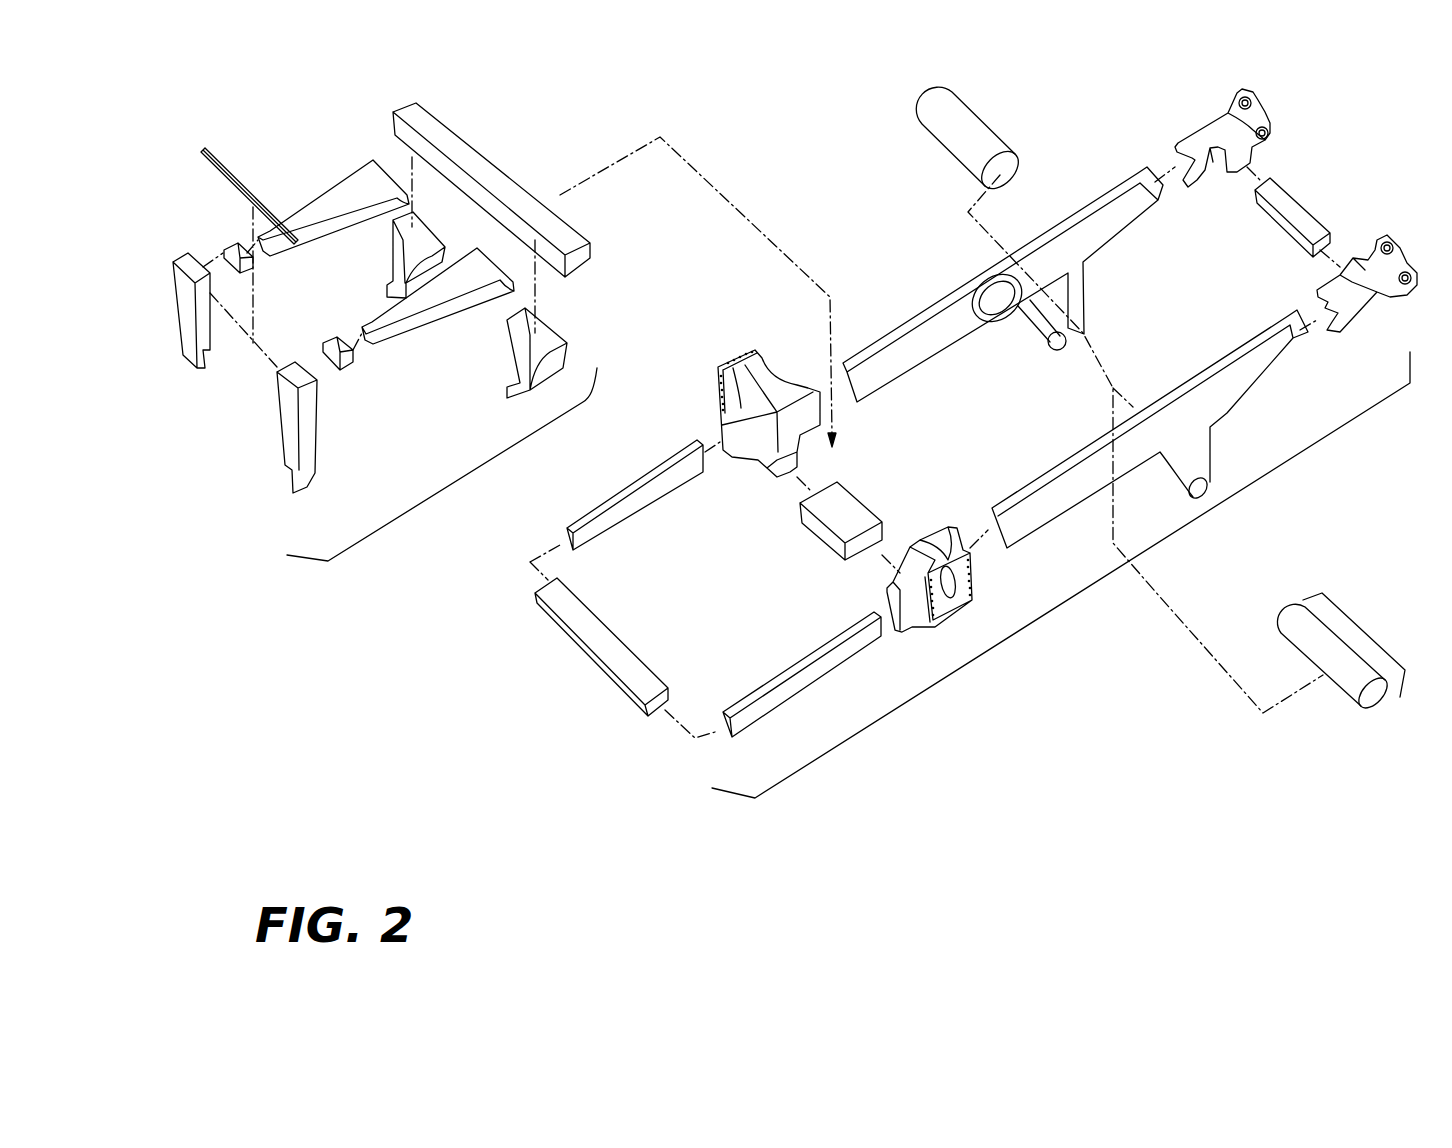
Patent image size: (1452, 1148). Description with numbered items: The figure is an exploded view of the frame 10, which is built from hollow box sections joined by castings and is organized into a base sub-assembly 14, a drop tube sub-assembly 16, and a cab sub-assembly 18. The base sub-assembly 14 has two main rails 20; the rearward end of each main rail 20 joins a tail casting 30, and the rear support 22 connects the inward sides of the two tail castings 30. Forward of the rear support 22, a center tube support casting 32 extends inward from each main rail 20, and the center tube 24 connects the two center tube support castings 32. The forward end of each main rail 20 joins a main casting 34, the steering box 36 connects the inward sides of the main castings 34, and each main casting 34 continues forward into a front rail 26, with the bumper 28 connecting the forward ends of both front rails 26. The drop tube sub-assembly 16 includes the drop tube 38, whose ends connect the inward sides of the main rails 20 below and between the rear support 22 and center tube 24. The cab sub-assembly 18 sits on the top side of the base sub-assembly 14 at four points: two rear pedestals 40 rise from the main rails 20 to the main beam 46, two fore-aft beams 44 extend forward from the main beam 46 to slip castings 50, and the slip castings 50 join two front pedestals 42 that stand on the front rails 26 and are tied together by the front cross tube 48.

The frame 10 is at (378, 667).
The base sub-assembly 14 is at (1045, 610).
The drop tube sub-assembly 16 is at (1365, 630).
The cab sub-assembly 18 is at (458, 484).
The main rails 20 is at (1227, 408).
The rear support 22 is at (1287, 180).
The center tube 24 is at (987, 137).
The front rails 26 is at (662, 495).
The bumper 28 is at (623, 653).
The tail casting 30 is at (1385, 232).
The center tube support casting 32 is at (1007, 327).
The main casting 34 is at (758, 377).
The steering box 36 is at (852, 508).
The drop tube 38 is at (1345, 678).
The rear pedestals 40 is at (400, 260).
The front pedestals 42 is at (197, 320).
The fore-aft beams 44 is at (333, 195).
The main beam 46 is at (417, 122).
The front cross tube 48 is at (232, 168).
The slip castings 50 is at (332, 340).